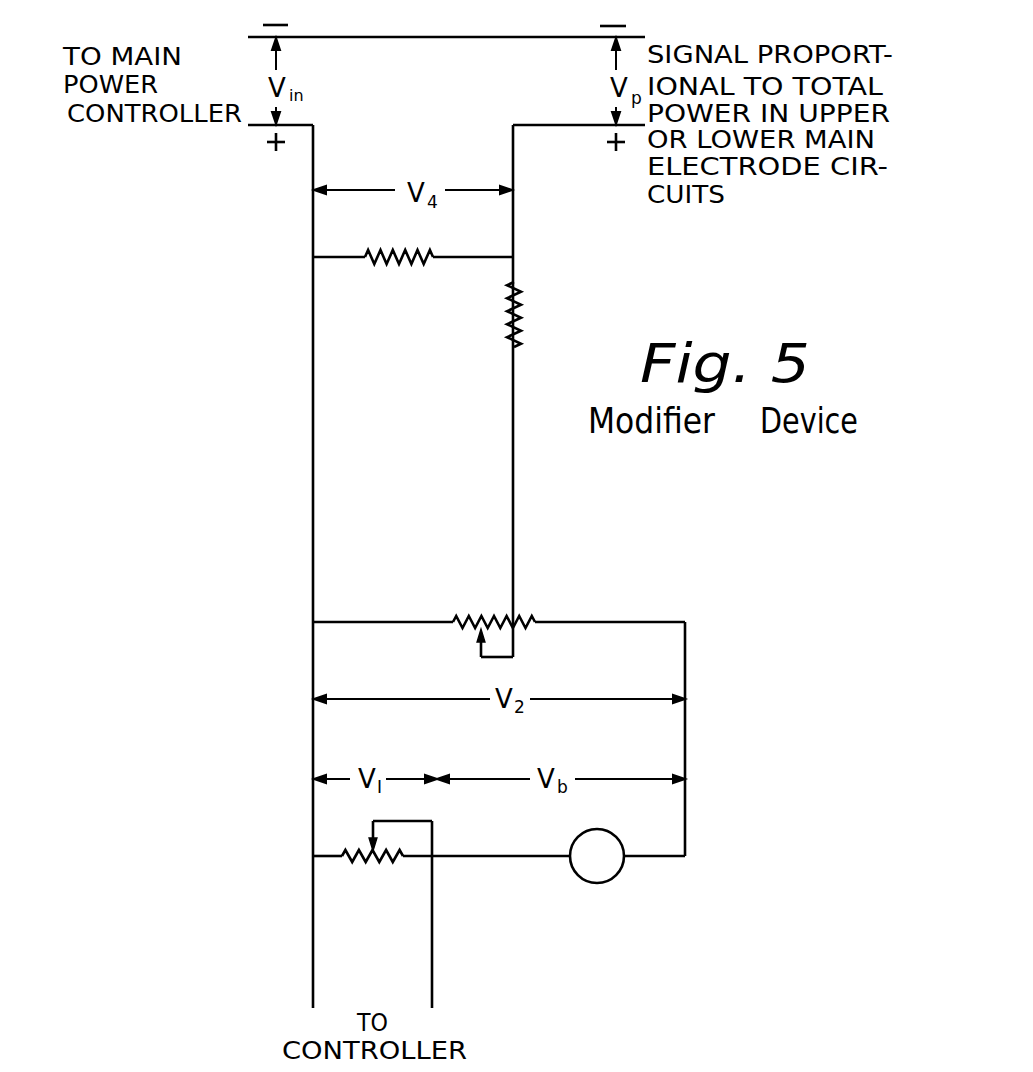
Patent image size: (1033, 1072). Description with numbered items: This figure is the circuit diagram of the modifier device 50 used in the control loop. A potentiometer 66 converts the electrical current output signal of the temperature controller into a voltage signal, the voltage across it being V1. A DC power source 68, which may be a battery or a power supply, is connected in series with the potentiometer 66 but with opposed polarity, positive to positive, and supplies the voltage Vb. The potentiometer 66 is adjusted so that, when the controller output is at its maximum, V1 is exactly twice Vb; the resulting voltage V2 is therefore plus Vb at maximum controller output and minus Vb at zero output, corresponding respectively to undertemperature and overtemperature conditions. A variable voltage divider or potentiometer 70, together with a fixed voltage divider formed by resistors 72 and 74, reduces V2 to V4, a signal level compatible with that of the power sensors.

The modifier device 50 is at (300, 406).
The potentiometer 66 is at (378, 866).
The DC power source 68 is at (600, 883).
The potentiometer 70 is at (486, 613).
The resistor 72 is at (520, 307).
The resistor 74 is at (394, 265).